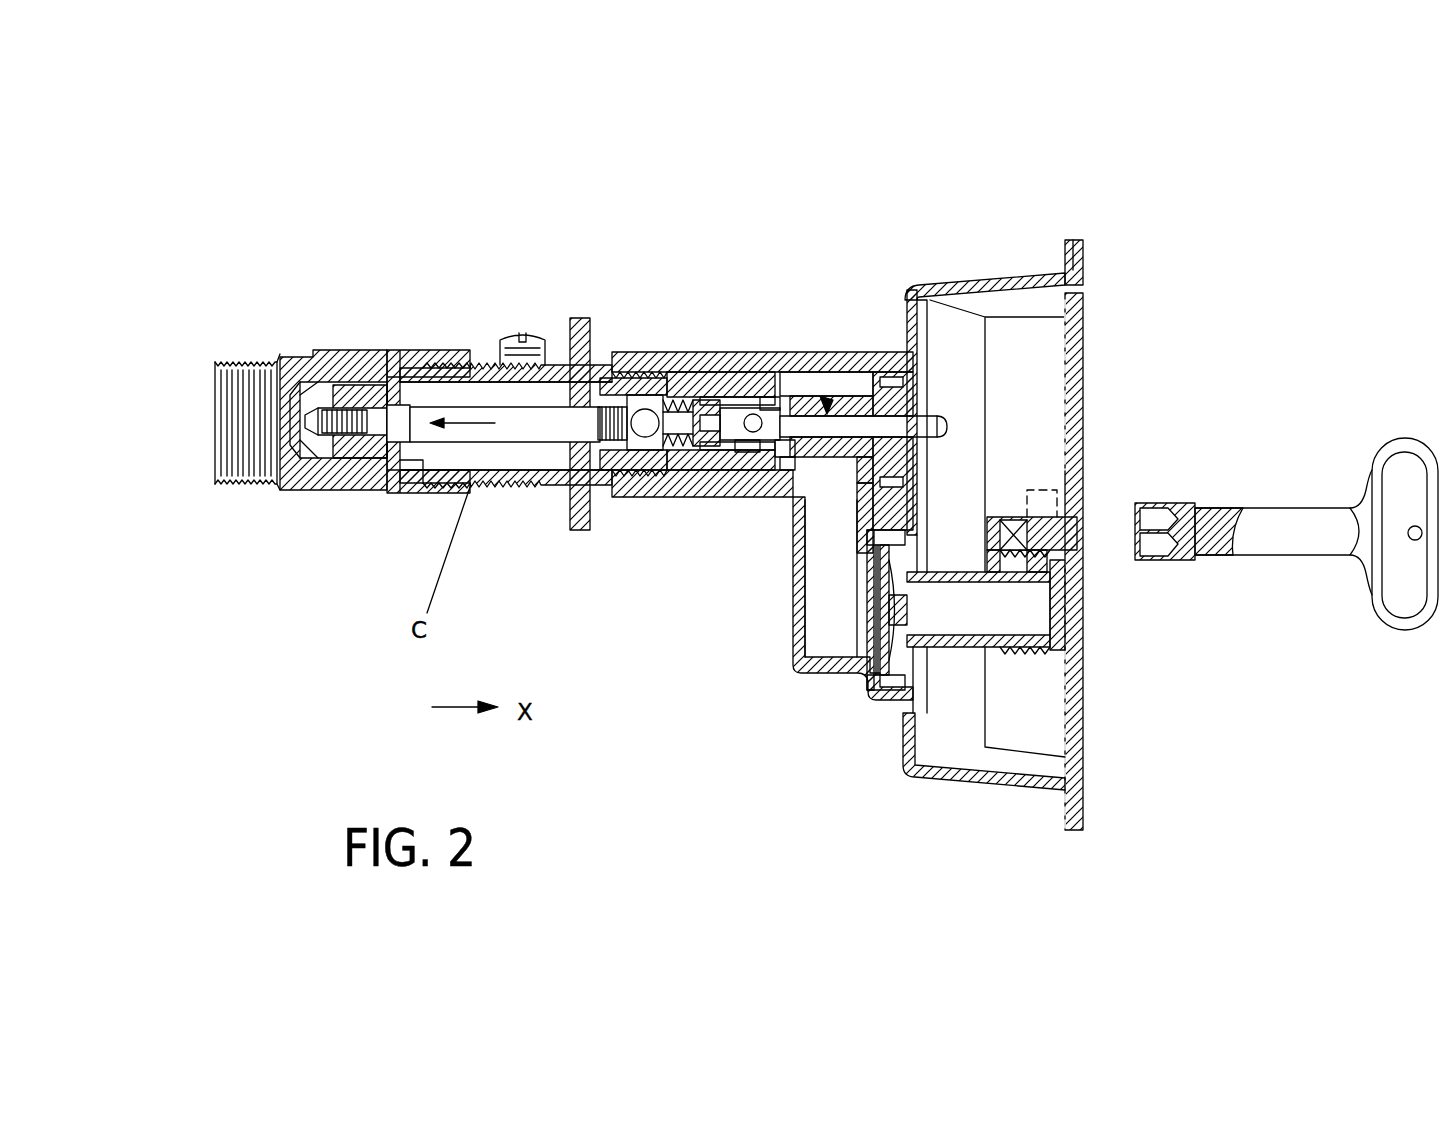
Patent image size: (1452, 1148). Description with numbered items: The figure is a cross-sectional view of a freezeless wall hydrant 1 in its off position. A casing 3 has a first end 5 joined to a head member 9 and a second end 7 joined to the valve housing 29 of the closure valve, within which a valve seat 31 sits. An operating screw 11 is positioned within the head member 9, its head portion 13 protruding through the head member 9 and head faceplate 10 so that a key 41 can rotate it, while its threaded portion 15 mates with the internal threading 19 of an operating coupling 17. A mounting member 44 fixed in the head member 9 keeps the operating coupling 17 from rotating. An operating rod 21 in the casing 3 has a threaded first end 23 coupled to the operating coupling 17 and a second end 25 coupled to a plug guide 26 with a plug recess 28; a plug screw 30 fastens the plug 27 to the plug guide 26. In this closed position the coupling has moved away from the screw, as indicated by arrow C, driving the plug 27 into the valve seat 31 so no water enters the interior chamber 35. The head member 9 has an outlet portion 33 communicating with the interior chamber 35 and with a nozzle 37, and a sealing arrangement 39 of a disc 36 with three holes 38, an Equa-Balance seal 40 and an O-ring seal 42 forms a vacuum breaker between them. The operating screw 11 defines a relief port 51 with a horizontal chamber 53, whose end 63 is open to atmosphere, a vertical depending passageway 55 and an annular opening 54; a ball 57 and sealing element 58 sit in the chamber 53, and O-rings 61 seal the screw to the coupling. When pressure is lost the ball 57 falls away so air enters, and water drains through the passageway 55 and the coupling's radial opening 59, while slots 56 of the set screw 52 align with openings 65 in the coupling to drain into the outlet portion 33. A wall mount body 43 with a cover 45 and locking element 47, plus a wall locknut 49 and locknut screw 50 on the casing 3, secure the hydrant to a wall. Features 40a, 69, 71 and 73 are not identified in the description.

The freezeless hydrant 1 is at (612, 196).
The casing 3 is at (482, 363).
The first end 5 is at (686, 365).
The second end 7 is at (408, 478).
The head member 9 is at (808, 400).
The head faceplate 10 is at (965, 790).
The operating screw 11 is at (877, 355).
The head portion 13 is at (945, 412).
The threaded portion 15 is at (745, 395).
The operating coupling 17 is at (643, 453).
The internal threading 19 is at (677, 460).
The operating rod 21 is at (520, 435).
The threaded first end 23 is at (603, 410).
The second end 25 is at (397, 380).
The plug guide 26 is at (373, 370).
The plug 27 is at (323, 463).
The plug recess 28 is at (330, 392).
The valve housing 29 is at (275, 487).
The plug screw 30 is at (283, 385).
The valve seat 31 is at (352, 470).
The outlet portion 33 is at (817, 587).
The interior chamber 35 is at (530, 407).
The disc 36 is at (877, 630).
The nozzle 37 is at (1035, 657).
The holes 38 is at (863, 640).
The sealing arrangement 39 is at (866, 615).
The Equa-Balance seal 40 is at (887, 650).
The outlet bore 40a is at (1040, 617).
The key 41 is at (1247, 510).
The O-ring seal 42 is at (888, 705).
The wall mount body 43 is at (948, 300).
The mounting member 44 is at (792, 400).
The cover 45 is at (1083, 375).
The locking element 47 is at (1072, 518).
The wall locknut 49 is at (560, 335).
The locknut screw 50 is at (517, 335).
The relief port 51 is at (853, 392).
The set screw 52 is at (720, 397).
The chamber 53 is at (768, 455).
The annular opening 54 is at (782, 458).
The vertical depending passageway 55 is at (838, 372).
The slots 56 is at (712, 435).
The ball 57 is at (718, 465).
The sealing element 58 is at (750, 455).
The radial opening 59 is at (793, 458).
The O-rings 61 is at (762, 400).
The end 63 is at (945, 427).
The openings 65 is at (643, 395).
The upper retainer 69 is at (873, 567).
The pipe flange 71 is at (983, 657).
The valve seat 73 is at (890, 605).